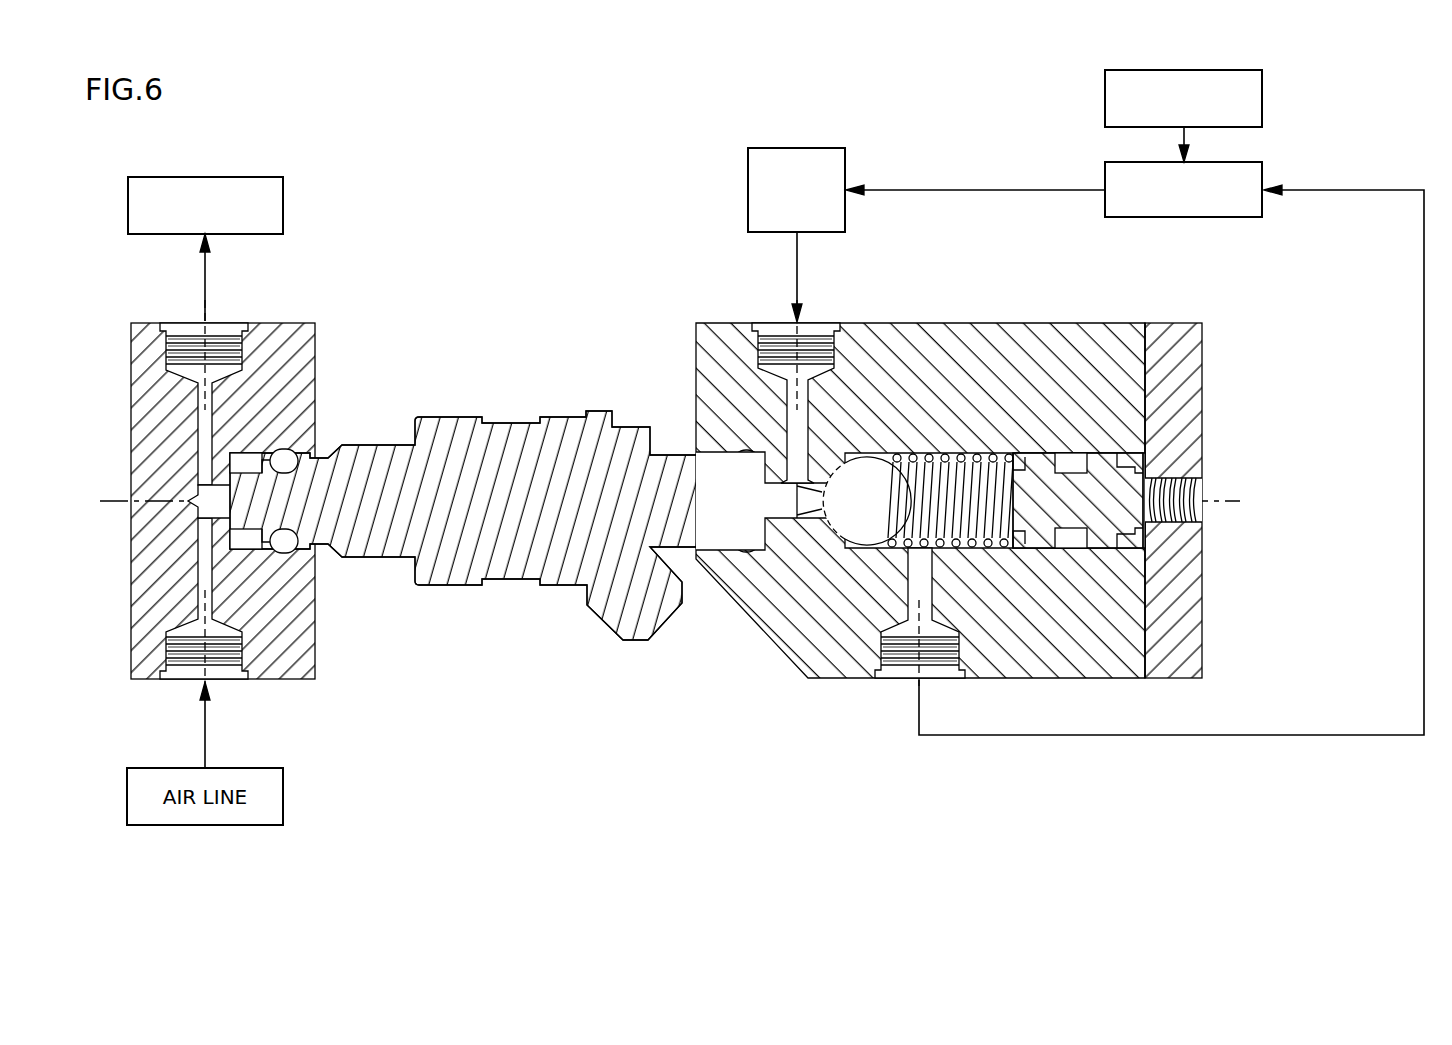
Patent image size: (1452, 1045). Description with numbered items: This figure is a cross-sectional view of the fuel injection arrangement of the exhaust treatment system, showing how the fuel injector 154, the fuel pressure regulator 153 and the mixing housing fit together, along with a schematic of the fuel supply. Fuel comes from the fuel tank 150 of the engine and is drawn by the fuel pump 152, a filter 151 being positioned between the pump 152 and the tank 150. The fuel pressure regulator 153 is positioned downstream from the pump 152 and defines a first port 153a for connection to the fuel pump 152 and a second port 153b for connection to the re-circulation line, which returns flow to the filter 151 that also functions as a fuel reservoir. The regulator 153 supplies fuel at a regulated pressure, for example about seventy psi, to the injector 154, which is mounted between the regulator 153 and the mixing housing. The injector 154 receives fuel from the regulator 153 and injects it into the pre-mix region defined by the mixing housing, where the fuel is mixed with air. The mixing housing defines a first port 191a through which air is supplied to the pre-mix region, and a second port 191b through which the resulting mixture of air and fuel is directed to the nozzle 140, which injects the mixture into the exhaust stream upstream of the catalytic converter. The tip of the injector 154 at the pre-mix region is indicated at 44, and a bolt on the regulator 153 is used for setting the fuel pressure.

The nozzle tip / orifice 44 is at (190, 508).
The nozzle 140 is at (285, 192).
The fuel tank 150 is at (1248, 70).
The filter 151 is at (1253, 162).
The fuel pump 152 is at (833, 146).
The fuel pressure regulator 153 is at (1007, 323).
The first port 153a is at (827, 323).
The second port 153b is at (900, 672).
The fuel injector 154 is at (498, 423).
The first port 191a is at (221, 677).
The second port 191b is at (223, 330).